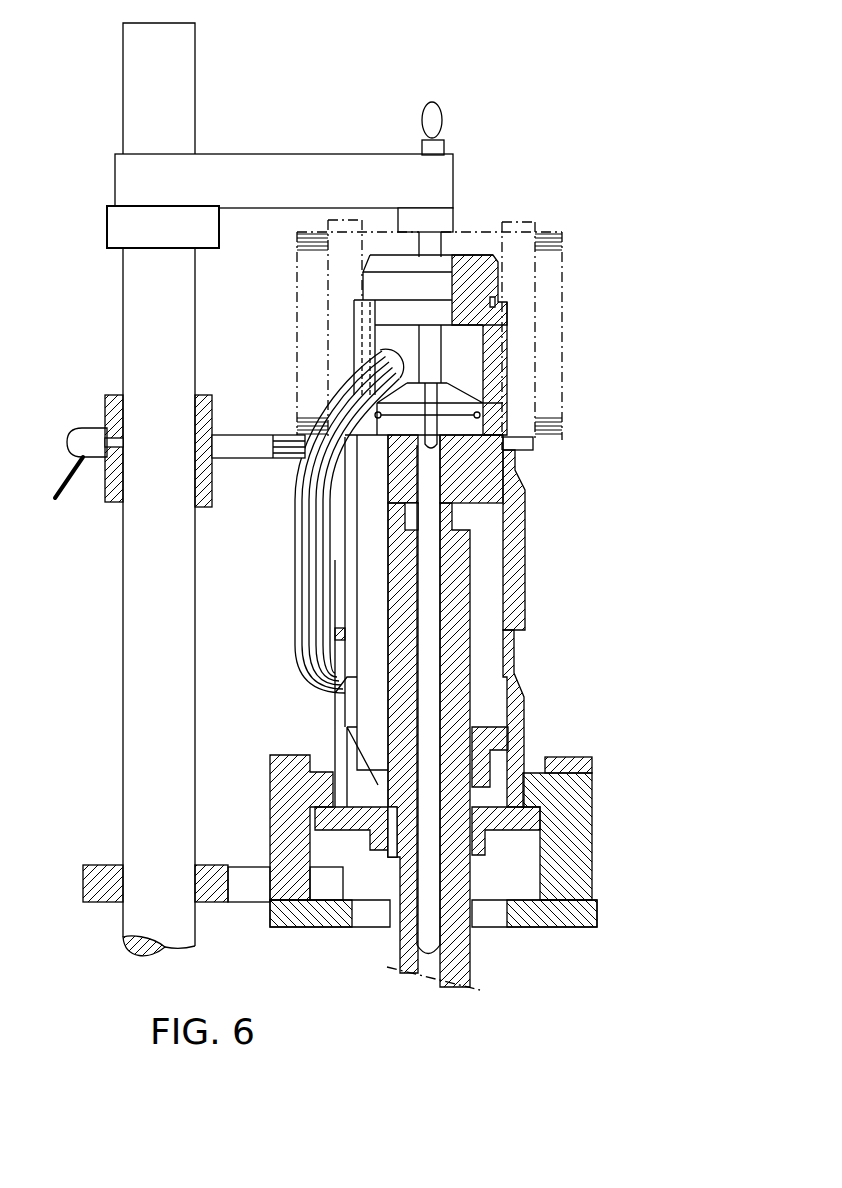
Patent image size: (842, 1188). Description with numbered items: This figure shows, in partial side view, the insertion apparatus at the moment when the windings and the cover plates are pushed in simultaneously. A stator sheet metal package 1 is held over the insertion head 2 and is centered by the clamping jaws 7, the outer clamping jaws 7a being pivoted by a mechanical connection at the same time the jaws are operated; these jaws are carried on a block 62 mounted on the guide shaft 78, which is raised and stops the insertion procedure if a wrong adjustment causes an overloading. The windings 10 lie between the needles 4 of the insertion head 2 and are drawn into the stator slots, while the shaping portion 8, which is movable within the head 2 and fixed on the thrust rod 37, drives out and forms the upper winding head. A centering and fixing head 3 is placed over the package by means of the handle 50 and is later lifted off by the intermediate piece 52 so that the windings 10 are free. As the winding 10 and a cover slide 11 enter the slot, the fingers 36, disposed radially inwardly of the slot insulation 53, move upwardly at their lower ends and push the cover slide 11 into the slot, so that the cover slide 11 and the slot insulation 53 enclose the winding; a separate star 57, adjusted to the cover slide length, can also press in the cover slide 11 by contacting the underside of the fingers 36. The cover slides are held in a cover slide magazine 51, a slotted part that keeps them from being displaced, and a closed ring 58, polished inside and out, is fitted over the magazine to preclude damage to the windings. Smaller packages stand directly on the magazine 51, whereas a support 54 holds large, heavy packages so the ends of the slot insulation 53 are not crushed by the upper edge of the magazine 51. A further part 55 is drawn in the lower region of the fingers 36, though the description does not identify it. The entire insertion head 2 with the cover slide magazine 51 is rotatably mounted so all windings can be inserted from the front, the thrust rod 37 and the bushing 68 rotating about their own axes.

The stator sheet metal package 1 is at (552, 380).
The insertion head 2 is at (483, 465).
The centering and fixing head 3 is at (495, 277).
The needles 4 is at (490, 347).
The clamping jaws 7 is at (447, 222).
The outer clamping jaws 7a is at (293, 176).
The shaping portion 8 is at (457, 402).
The windings 10 is at (345, 372).
The cover slide 11 is at (338, 643).
The fingers 36 is at (368, 592).
The thrust rod 37 is at (432, 872).
The handle 50 is at (444, 122).
The cover slide magazine 51 is at (513, 665).
The intermediate piece 52 is at (430, 343).
The slot insulation 53 is at (530, 445).
The support 54 is at (288, 460).
The lower tube 55 is at (370, 745).
The star 57 is at (493, 737).
The closed ring 58 is at (527, 562).
The block 62 is at (120, 235).
The bushing 68 is at (463, 640).
The guide shaft 78 is at (123, 657).